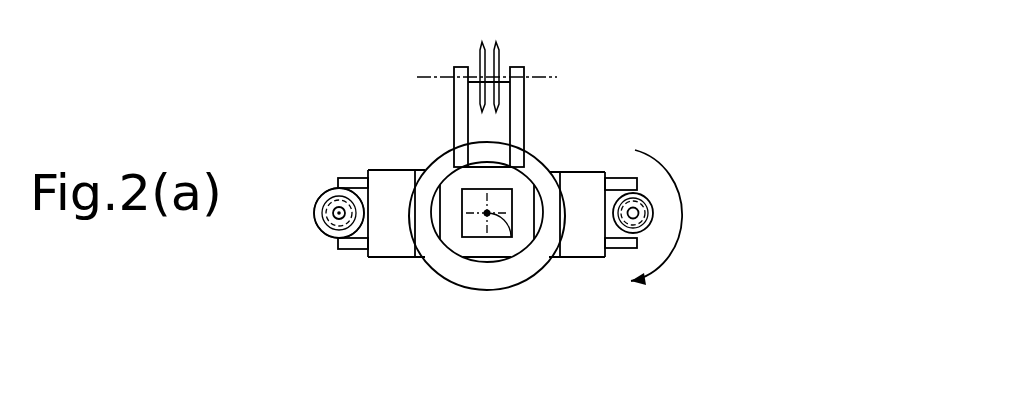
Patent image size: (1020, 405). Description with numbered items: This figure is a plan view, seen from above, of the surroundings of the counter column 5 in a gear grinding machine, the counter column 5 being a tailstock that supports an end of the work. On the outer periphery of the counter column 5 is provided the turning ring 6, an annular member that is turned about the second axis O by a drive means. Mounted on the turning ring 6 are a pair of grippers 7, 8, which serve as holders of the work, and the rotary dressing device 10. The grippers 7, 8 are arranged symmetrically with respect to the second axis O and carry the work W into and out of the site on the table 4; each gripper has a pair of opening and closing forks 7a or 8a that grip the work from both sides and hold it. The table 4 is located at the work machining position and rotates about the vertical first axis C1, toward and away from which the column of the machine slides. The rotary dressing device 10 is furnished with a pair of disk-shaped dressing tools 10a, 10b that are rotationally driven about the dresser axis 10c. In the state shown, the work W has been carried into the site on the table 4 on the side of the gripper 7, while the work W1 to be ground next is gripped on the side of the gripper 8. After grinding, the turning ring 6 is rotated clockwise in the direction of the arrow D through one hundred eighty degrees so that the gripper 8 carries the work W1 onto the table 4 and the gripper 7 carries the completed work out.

The table 4 is at (328, 181).
The counter column 5 is at (475, 252).
The turning ring 6 is at (490, 281).
The gripper 7 is at (388, 247).
The opening and closing forks 7a is at (356, 178).
The gripper 8 is at (569, 247).
The opening and closing forks 8a is at (622, 177).
The rotary dressing device 10 is at (548, 62).
The dressing tool 10a is at (478, 60).
The dressing tool 10b is at (512, 52).
The dresser axis 10c is at (418, 77).
The first axis C1 is at (339, 213).
The work W is at (319, 220).
The work to be ground next W1 is at (652, 207).
The arrow D is at (682, 240).
The second axis O is at (512, 237).